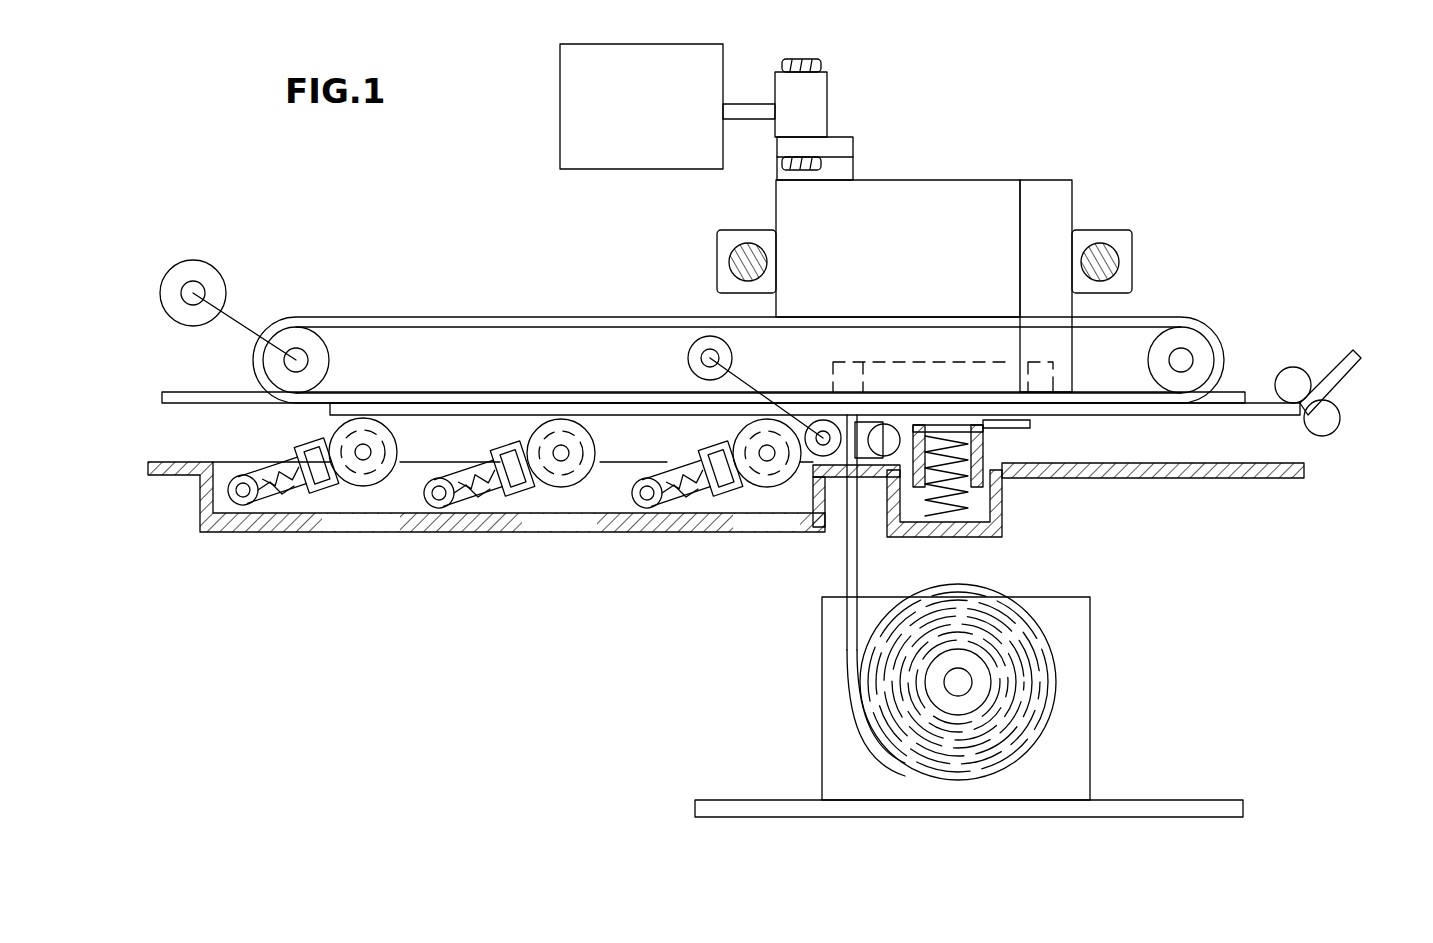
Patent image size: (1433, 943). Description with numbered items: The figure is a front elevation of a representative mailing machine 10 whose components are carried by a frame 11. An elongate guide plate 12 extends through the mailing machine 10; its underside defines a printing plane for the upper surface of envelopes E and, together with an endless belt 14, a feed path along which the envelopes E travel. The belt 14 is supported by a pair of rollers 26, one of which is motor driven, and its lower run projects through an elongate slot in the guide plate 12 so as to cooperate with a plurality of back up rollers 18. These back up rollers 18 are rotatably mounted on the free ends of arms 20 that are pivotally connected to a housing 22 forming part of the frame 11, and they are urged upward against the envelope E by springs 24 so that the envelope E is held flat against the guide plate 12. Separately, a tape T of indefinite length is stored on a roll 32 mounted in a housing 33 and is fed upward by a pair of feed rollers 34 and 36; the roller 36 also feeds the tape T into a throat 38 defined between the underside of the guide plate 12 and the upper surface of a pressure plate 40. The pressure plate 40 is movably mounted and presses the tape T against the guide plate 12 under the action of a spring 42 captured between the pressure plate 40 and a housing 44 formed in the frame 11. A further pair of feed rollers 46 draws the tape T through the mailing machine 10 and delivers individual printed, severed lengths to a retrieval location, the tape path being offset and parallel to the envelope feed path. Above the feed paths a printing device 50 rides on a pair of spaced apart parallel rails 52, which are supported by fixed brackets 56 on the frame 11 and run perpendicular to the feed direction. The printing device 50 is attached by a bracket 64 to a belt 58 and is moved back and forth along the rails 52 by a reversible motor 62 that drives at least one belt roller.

The mailing machine 10 is at (1278, 570).
The frame 11 is at (155, 463).
The guide plate 12 is at (176, 392).
The endless belt 14 is at (420, 317).
The back up rollers 18 is at (362, 490).
The arms 20 is at (258, 498).
The housing 22 is at (612, 535).
The springs 24 is at (300, 508).
The rollers 26 is at (298, 340).
The roll 32 is at (1055, 648).
The housing 33 is at (1090, 745).
The feed roller 34 is at (818, 428).
The feed roller 36 is at (915, 428).
The throat 38 is at (868, 428).
The pressure plate 40 is at (1005, 428).
The spring 42 is at (985, 495).
The housing 44 is at (1005, 532).
The feed rollers 46 is at (1305, 366).
The printing device 50 is at (1088, 78).
The rails 52 is at (729, 263).
The fixed brackets 56 is at (735, 232).
The belt 58 is at (812, 58).
The reversible motor 62 is at (560, 128).
The bracket 64 is at (853, 150).
The tape T is at (840, 568).
The envelopes E is at (455, 428).